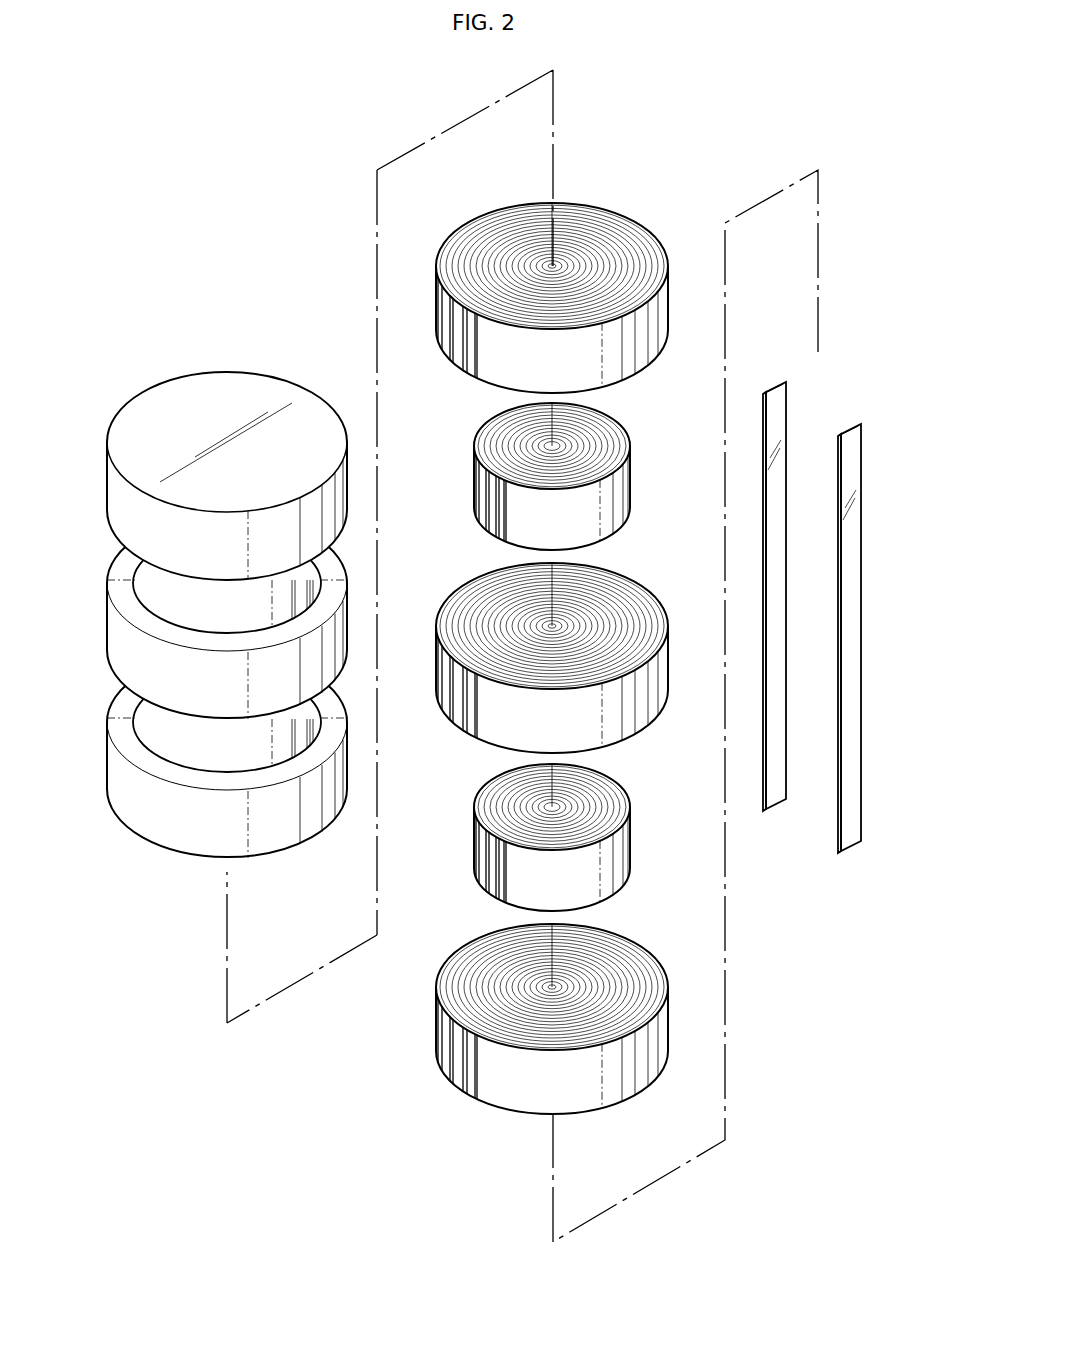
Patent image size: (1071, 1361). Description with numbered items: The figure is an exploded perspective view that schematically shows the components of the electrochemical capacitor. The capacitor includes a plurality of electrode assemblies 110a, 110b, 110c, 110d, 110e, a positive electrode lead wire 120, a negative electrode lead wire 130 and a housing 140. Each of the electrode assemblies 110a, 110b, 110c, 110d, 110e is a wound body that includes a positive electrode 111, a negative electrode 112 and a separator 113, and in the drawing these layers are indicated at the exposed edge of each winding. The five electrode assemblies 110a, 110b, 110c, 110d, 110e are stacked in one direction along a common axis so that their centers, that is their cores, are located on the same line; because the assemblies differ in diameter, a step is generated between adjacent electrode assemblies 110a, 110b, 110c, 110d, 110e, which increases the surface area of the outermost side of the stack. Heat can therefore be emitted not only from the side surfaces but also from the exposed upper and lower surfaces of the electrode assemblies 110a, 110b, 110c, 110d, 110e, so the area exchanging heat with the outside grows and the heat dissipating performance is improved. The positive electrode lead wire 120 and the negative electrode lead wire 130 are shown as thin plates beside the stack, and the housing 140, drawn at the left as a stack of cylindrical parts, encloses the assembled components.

The electrode assembly 110a is at (571, 310).
The electrode assembly 110b is at (590, 482).
The electrode assembly 110c is at (571, 670).
The electrode assembly 110d is at (590, 844).
The electrode assembly 110e is at (571, 1032).
The positive electrode 111 is at (450, 726).
The negative electrode 112 is at (440, 688).
The separator 113 is at (454, 733).
The positive electrode lead wire 120 is at (776, 806).
The negative electrode lead wire 130 is at (851, 848).
The housing 140 is at (177, 358).